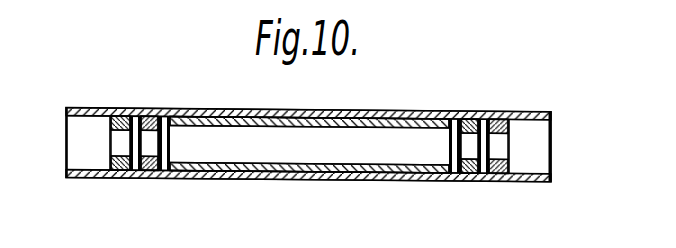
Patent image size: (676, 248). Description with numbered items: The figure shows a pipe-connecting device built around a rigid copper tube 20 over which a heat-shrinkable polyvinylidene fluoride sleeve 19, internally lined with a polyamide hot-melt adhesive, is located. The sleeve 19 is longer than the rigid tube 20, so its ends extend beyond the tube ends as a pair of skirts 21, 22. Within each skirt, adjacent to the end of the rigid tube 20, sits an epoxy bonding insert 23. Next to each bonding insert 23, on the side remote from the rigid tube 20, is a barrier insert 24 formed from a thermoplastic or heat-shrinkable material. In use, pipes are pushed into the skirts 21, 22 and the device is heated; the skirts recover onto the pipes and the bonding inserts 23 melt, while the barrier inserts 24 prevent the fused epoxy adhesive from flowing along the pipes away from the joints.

The heat-shrinkable polyvinylidene fluoride sleeve 19 is at (378, 110).
The rigid copper tube 20 is at (352, 170).
The skirt 21 is at (79, 107).
The skirt 22 is at (527, 178).
The epoxy bonding insert 23 is at (146, 176).
The barrier insert 24 is at (118, 117).